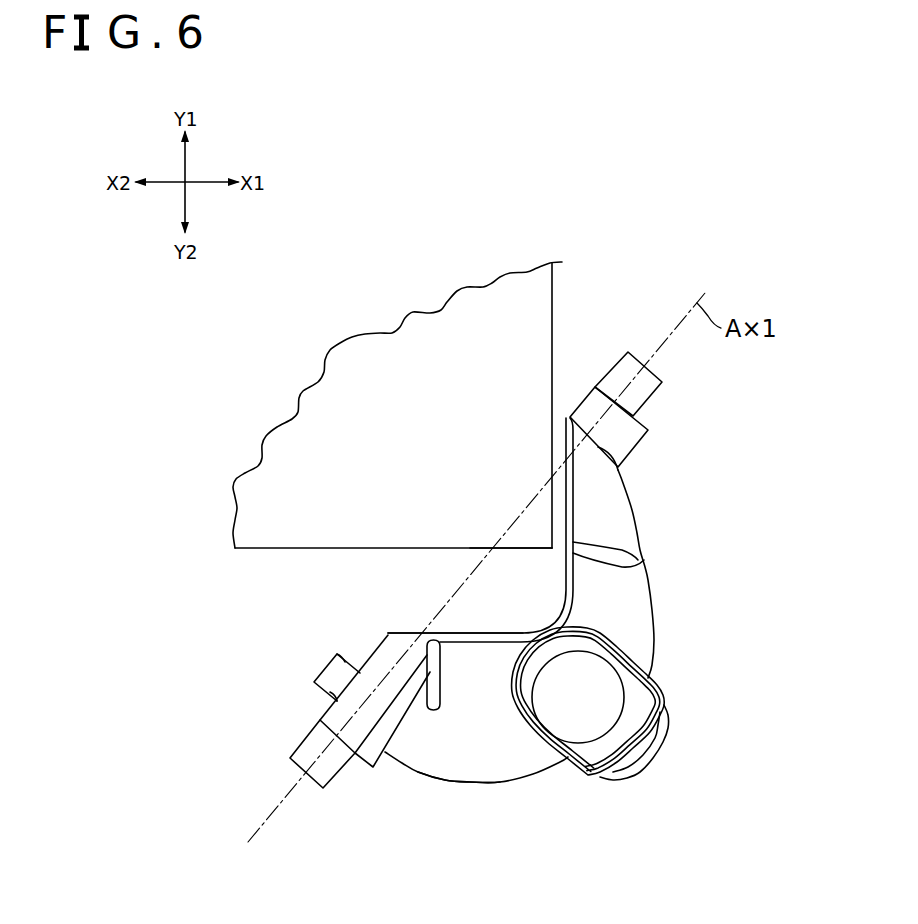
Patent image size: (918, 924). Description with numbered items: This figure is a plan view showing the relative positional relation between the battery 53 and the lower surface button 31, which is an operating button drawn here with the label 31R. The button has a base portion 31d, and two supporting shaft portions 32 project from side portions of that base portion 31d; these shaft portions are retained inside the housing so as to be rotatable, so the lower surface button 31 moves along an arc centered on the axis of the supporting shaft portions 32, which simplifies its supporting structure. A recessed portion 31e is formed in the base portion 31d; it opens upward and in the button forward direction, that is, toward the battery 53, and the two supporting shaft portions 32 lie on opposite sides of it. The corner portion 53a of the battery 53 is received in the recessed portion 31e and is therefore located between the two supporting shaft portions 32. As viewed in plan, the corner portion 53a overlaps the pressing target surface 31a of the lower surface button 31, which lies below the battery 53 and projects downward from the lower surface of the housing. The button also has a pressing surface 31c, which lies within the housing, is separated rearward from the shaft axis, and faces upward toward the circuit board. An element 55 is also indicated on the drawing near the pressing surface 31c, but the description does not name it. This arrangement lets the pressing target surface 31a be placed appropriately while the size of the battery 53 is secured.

The lower surface button 31 is at (573, 625).
The right bracket 31R is at (573, 625).
The pressing target surface 31a is at (423, 633).
The pressing surface 31c is at (641, 696).
The base portion 31d is at (467, 763).
The recessed portion 31e is at (493, 567).
The supporting shaft portions 32 is at (642, 388).
The battery 53 is at (303, 548).
The corner portion 53a is at (547, 546).
The through hole 55 is at (581, 742).